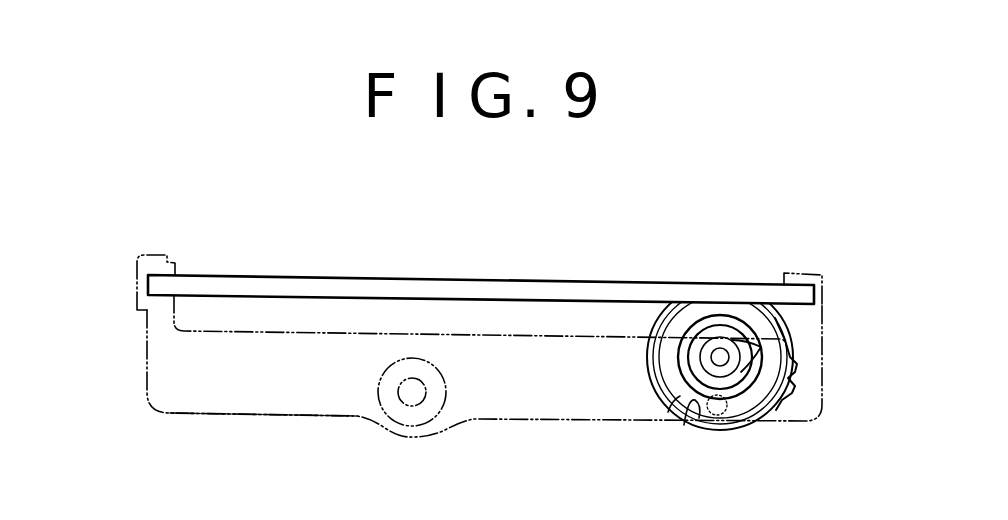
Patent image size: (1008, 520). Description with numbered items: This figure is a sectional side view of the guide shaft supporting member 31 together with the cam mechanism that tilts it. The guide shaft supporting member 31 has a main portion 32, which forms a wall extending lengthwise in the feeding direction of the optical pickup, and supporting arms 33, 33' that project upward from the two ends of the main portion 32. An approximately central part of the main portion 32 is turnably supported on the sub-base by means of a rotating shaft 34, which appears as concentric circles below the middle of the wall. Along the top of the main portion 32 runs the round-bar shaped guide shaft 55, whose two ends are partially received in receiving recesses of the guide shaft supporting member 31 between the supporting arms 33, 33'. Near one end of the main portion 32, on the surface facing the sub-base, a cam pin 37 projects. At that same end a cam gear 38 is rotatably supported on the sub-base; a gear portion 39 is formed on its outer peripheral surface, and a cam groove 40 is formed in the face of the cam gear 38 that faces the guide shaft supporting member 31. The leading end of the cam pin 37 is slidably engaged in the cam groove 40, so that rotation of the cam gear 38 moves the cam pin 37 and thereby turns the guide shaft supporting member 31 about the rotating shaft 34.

The guide shaft supporting member 31 is at (545, 422).
The main portion 32 is at (315, 417).
The supporting arm 33 is at (832, 261).
The supporting arm 33' is at (125, 258).
The rotating shaft 34 is at (400, 398).
The cam pin 37 is at (727, 415).
The cam gear 38 is at (670, 406).
The gear portion 39 is at (780, 397).
The cam groove 40 is at (684, 425).
The guide shaft 55 is at (468, 286).